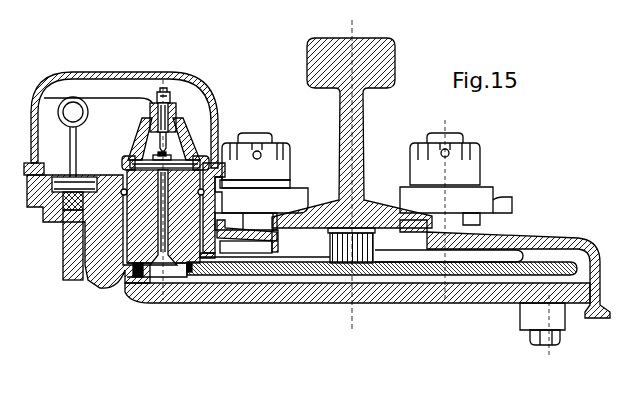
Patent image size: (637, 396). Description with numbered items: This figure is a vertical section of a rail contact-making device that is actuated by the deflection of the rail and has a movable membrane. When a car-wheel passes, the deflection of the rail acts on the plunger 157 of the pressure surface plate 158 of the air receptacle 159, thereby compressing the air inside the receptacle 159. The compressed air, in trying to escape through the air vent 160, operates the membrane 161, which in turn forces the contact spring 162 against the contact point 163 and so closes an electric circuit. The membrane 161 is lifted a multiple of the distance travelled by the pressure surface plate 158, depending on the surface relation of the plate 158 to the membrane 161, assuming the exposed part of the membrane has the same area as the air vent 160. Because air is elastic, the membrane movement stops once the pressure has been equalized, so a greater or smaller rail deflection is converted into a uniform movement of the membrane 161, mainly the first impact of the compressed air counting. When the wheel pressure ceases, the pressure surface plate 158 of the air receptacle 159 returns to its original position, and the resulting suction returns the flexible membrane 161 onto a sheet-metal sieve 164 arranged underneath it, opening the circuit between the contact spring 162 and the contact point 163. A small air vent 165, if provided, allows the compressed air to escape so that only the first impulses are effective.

The plunger 157 is at (367, 245).
The pressure surface plate 158 is at (530, 265).
The air receptacle 159 is at (325, 284).
The air vent 160 is at (158, 266).
The membrane 161 is at (200, 191).
The contact spring 162 is at (169, 158).
The contact point 163 is at (166, 147).
The sheet-metal sieve 164 is at (215, 194).
The small air vent 165 is at (141, 184).